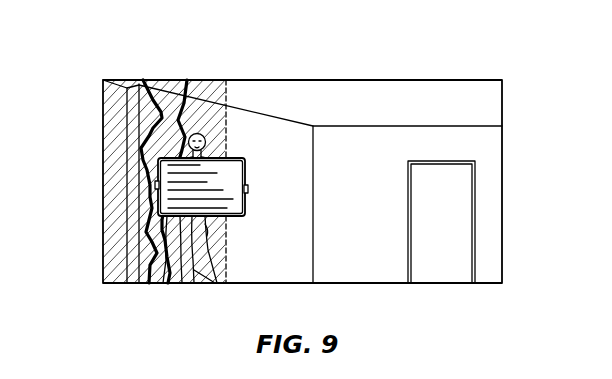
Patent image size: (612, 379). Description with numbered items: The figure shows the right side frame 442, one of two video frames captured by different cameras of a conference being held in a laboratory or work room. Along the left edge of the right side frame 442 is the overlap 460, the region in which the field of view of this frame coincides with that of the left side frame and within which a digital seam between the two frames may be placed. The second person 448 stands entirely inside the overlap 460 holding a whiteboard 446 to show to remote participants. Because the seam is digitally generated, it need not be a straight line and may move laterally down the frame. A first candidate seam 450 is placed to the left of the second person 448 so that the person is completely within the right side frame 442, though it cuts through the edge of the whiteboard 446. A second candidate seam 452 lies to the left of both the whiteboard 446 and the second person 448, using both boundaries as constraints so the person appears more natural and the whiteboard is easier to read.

The right side frame 442 is at (403, 80).
The whiteboard 446 is at (245, 170).
The second person 448 is at (207, 232).
The first candidate seam 450 is at (174, 262).
The second candidate seam 452 is at (155, 270).
The overlap 460 is at (103, 69).